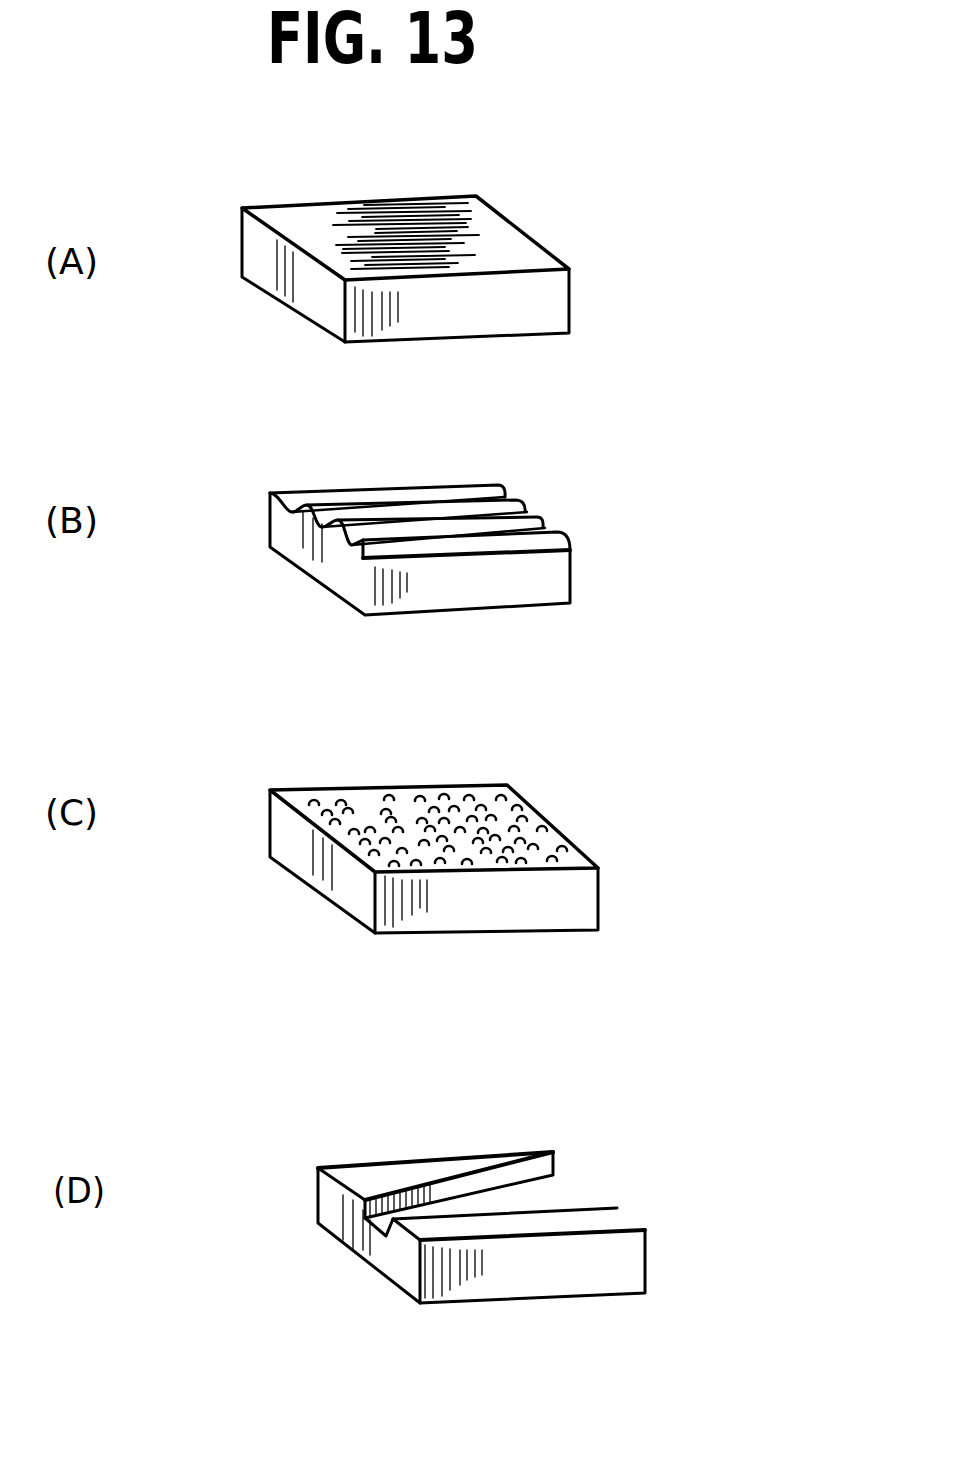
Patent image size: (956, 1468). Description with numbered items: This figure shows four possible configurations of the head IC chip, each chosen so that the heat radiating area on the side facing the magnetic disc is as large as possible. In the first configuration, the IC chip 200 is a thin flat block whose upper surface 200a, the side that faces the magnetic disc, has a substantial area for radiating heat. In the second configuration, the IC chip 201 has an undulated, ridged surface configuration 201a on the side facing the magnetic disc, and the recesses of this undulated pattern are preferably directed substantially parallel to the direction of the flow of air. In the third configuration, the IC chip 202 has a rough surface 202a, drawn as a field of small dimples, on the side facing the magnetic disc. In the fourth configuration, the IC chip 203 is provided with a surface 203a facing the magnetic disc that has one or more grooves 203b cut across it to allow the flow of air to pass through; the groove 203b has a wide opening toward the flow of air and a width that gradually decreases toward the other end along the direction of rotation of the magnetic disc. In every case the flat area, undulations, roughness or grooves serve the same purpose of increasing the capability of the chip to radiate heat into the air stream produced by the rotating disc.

The IC chip 200 is at (543, 306).
The surface 200a is at (500, 257).
The IC chip 201 is at (552, 575).
The corrugated (ridged) surface 201a is at (517, 527).
The IC chip 202 is at (570, 895).
The rough surface 202a is at (498, 808).
The IC chip 203 is at (617, 1267).
The surface 203a is at (467, 1237).
The groove 203b is at (548, 1202).